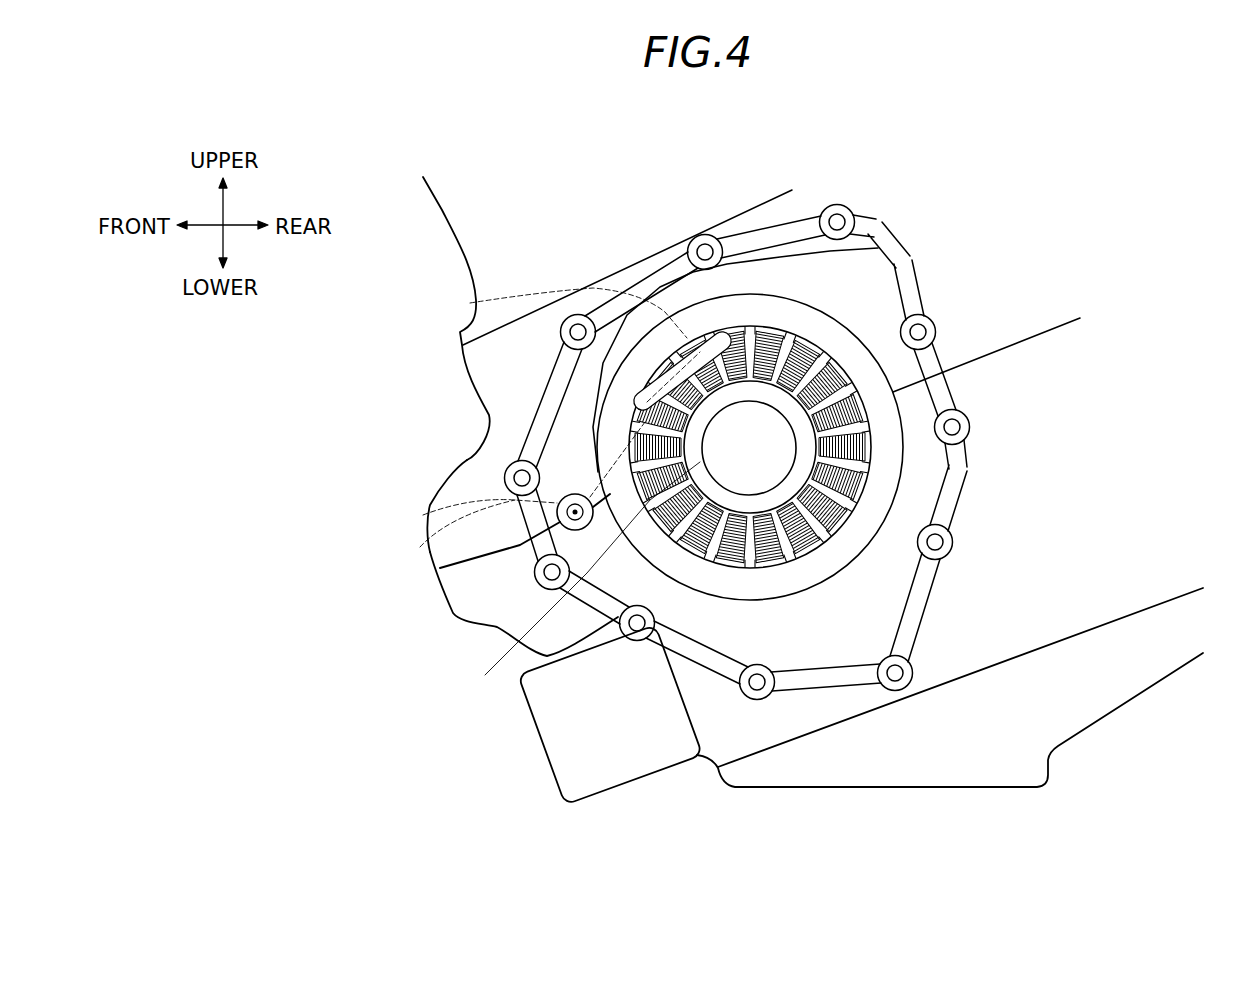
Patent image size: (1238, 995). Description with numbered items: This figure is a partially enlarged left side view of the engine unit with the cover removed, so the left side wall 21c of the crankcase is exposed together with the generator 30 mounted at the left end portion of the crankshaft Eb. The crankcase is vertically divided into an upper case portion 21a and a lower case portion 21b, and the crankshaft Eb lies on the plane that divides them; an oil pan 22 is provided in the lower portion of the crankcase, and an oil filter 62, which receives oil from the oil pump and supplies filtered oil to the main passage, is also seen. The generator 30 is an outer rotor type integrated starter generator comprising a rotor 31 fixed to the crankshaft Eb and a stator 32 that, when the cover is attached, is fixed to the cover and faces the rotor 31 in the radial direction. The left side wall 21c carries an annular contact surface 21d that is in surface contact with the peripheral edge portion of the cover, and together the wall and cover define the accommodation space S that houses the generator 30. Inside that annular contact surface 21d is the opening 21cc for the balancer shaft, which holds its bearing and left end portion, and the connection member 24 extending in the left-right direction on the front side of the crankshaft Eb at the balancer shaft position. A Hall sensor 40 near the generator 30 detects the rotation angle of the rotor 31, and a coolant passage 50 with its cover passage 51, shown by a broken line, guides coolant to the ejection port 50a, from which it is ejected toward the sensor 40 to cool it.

The upper case portion 21a is at (427, 513).
The lower case portion 21b is at (433, 587).
The left side wall 21c is at (508, 372).
The opening for the balancer shaft 21cc is at (438, 566).
The contact surface 21d is at (547, 415).
The oil pan 22 is at (927, 787).
The connection member 24 is at (737, 457).
The generator 30 is at (775, 296).
The rotor 31 is at (805, 317).
The stator 32 is at (818, 372).
The sensor 40 is at (710, 325).
The coolant passage 50 is at (533, 453).
The ejection port 50a is at (690, 344).
The cover passage 51 is at (590, 481).
The oil filter 62 is at (615, 767).
The crankshaft Eb is at (485, 675).
The accommodation space S is at (834, 641).